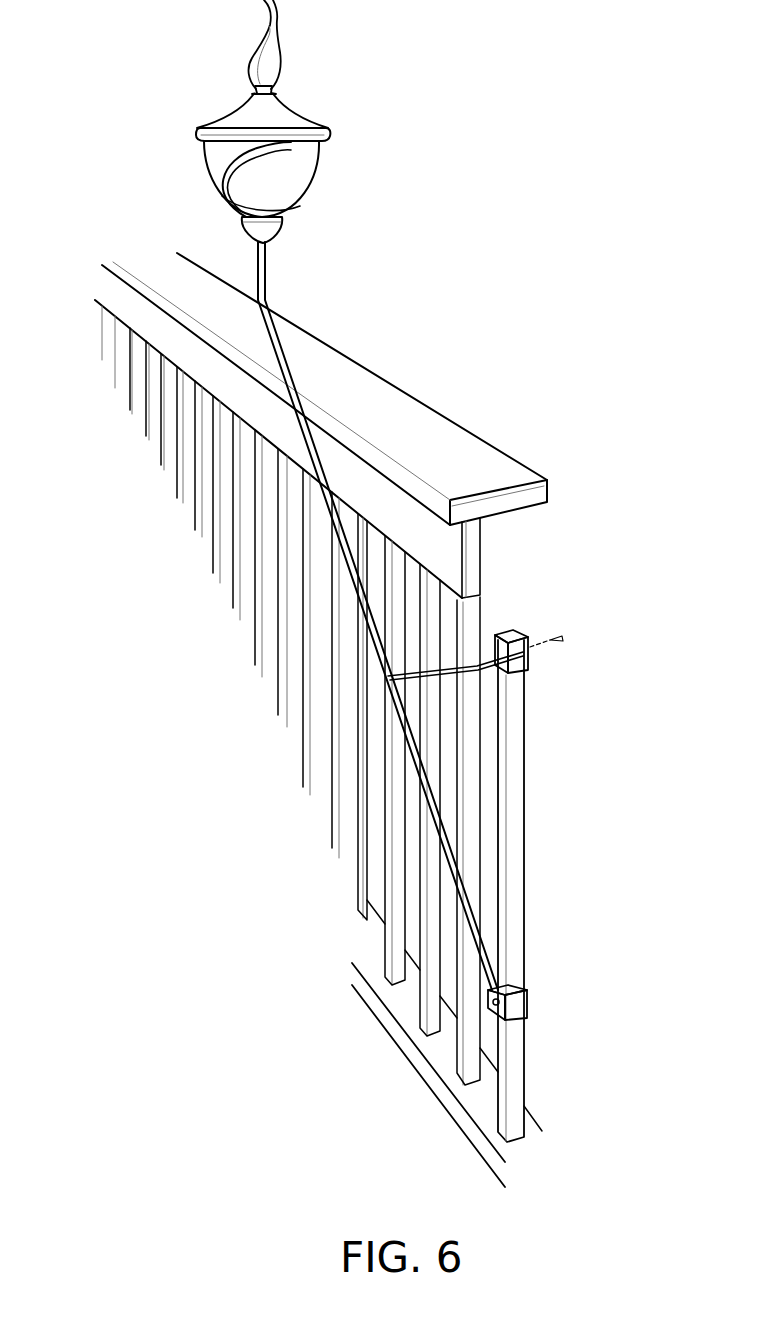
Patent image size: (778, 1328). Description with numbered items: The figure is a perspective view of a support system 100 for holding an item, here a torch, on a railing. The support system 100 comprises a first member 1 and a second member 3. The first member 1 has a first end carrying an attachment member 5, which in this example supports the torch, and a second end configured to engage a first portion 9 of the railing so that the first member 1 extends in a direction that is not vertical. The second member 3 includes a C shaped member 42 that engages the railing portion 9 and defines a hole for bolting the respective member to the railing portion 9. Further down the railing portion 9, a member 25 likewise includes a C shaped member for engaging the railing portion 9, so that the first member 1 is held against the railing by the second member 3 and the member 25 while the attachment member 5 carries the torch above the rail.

The support system 100 is at (230, 121).
The attachment member 5 is at (283, 224).
The first member 1 is at (437, 322).
The second member 3 is at (527, 620).
The C shaped member 42 is at (563, 639).
The first portion of a railing 9 is at (532, 897).
The member 25 is at (527, 1003).